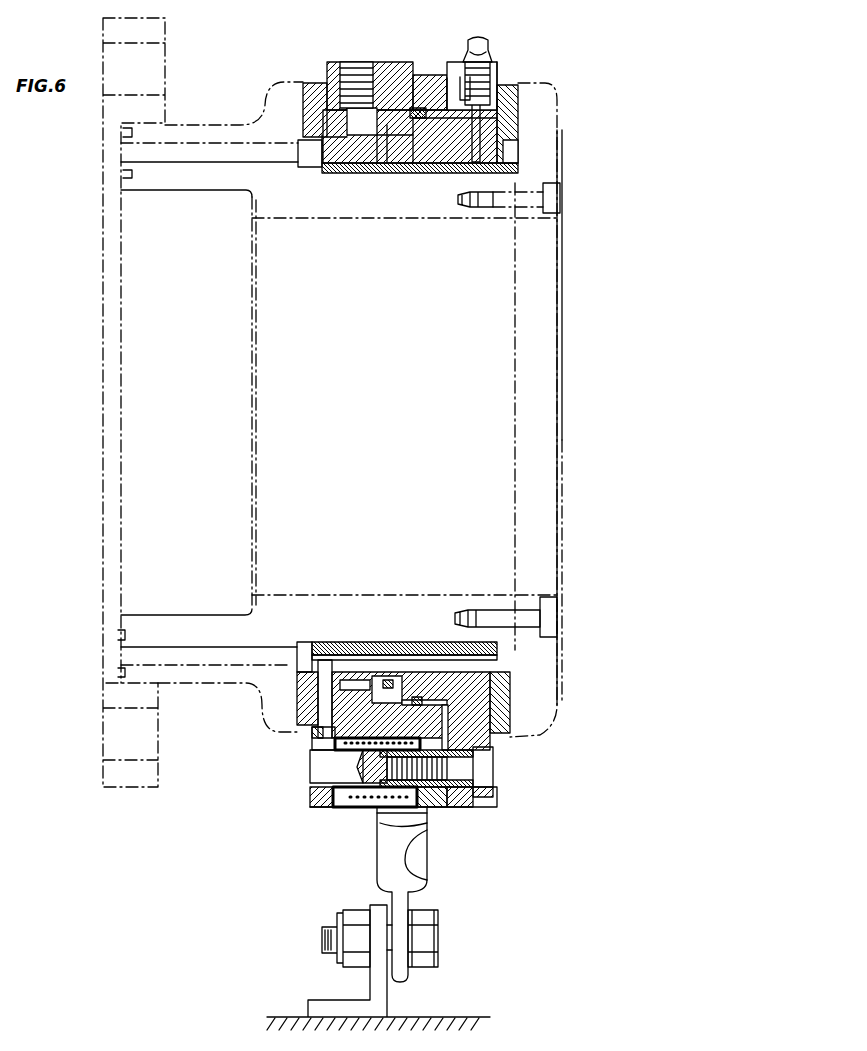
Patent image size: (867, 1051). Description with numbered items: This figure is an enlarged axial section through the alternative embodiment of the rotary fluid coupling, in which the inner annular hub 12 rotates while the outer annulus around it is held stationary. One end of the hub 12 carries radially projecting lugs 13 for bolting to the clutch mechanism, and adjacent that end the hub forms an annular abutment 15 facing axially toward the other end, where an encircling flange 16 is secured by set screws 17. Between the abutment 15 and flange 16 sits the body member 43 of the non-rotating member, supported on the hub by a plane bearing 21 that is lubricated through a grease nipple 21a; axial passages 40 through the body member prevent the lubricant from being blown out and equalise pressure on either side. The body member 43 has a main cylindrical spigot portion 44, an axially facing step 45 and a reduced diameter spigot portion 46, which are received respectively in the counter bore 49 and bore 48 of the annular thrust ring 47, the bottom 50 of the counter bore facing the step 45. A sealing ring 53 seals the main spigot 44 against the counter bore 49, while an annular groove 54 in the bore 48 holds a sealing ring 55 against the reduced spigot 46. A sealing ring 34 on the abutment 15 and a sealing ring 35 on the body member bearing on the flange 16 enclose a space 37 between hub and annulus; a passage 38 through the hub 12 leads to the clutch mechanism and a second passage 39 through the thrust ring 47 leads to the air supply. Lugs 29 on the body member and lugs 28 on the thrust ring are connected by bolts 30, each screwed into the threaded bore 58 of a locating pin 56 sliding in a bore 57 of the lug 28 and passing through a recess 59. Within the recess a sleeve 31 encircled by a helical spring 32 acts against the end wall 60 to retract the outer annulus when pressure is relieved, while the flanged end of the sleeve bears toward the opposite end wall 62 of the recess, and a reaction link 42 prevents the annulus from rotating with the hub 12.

The inner annular hub 12 is at (385, 600).
The lugs 13 is at (157, 30).
The annular encircling abutment 15 is at (268, 112).
The encircling flange 16 is at (556, 114).
The set screws 17 is at (548, 222).
The plane bearing 21 is at (493, 168).
The grease nipple 21a is at (487, 55).
The lugs 28 is at (410, 815).
The lugs 29 is at (484, 803).
The bolts 30 is at (484, 782).
The sleeve 31 is at (357, 808).
The helical spring 32 is at (373, 808).
The sealing ring 34 is at (312, 100).
The sealing ring 35 is at (510, 96).
The space 37 is at (312, 155).
The passage 38 is at (172, 155).
The second passage 39 is at (335, 82).
The axial passages 40 is at (340, 662).
The reaction link 42 is at (418, 884).
The body member 43 is at (435, 150).
The main cylindrical spigot portion 44 is at (452, 86).
The axially facing step 45 is at (413, 122).
The reduced diameter cylindrical spigot portion 46 is at (327, 160).
The annular thrust ring 47 is at (428, 85).
The bore 48 is at (360, 170).
The counter bore 49 is at (413, 113).
The bottom of counter bore 50 is at (400, 130).
The sealing ring 53 is at (418, 105).
The annular groove 54 is at (355, 85).
The sealing ring / countersunk bore 55 is at (377, 140).
The locating pin 56 is at (310, 764).
The bore 57 is at (327, 742).
The axial threaded bore 58 is at (383, 777).
The recess 59 is at (338, 735).
The end wall 60 is at (412, 866).
The body 62 is at (340, 725).